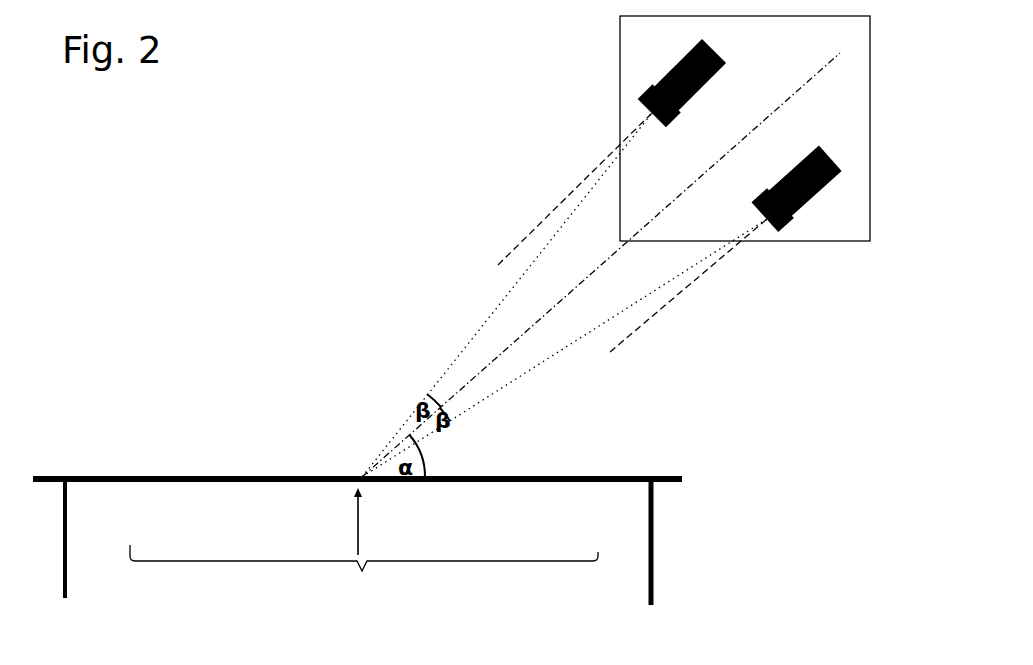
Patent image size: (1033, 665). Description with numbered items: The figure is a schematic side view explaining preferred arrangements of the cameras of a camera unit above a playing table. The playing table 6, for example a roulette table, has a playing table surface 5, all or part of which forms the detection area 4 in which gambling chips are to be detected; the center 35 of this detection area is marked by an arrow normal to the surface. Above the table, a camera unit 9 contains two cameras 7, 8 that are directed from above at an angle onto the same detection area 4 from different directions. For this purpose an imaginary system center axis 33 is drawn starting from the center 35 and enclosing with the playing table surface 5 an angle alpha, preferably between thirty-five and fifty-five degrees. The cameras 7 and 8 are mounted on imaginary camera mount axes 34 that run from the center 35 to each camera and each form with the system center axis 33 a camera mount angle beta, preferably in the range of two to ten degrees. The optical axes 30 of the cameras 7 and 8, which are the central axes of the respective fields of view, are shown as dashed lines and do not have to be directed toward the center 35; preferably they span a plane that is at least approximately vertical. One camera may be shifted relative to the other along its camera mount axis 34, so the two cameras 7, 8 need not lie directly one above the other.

The detection area 4 is at (364, 577).
The playing table surface 5 is at (610, 477).
The playing table 6 is at (653, 532).
The camera 7 is at (668, 73).
The camera 8 is at (805, 205).
The camera unit 9 is at (853, 117).
The optical axis 30 is at (528, 238).
The system center axis 33 is at (547, 313).
The camera mount axis 34 is at (490, 317).
The center of the detection area 35 is at (359, 519).